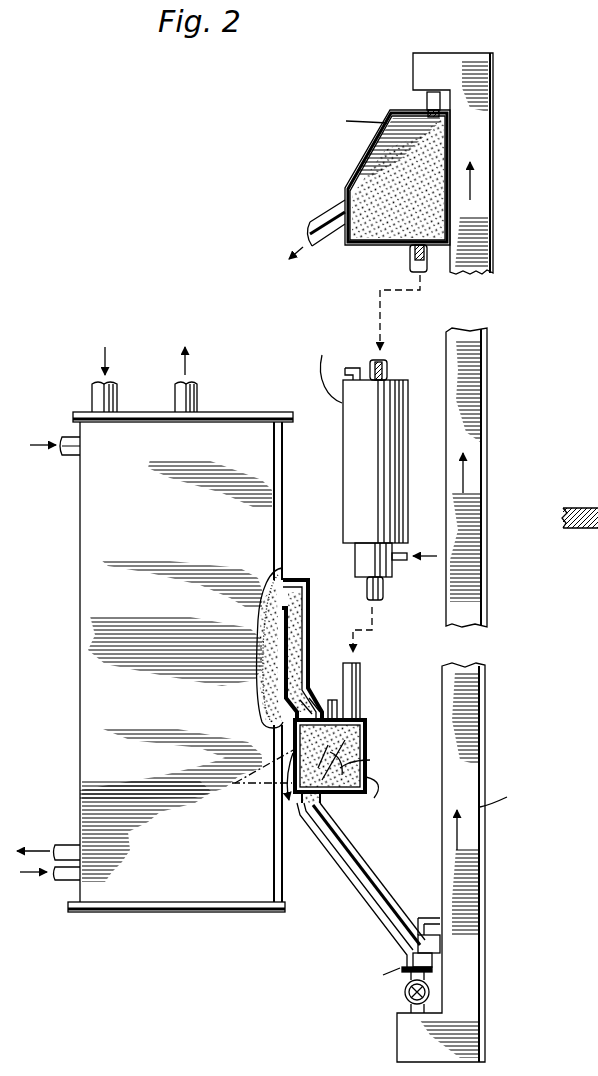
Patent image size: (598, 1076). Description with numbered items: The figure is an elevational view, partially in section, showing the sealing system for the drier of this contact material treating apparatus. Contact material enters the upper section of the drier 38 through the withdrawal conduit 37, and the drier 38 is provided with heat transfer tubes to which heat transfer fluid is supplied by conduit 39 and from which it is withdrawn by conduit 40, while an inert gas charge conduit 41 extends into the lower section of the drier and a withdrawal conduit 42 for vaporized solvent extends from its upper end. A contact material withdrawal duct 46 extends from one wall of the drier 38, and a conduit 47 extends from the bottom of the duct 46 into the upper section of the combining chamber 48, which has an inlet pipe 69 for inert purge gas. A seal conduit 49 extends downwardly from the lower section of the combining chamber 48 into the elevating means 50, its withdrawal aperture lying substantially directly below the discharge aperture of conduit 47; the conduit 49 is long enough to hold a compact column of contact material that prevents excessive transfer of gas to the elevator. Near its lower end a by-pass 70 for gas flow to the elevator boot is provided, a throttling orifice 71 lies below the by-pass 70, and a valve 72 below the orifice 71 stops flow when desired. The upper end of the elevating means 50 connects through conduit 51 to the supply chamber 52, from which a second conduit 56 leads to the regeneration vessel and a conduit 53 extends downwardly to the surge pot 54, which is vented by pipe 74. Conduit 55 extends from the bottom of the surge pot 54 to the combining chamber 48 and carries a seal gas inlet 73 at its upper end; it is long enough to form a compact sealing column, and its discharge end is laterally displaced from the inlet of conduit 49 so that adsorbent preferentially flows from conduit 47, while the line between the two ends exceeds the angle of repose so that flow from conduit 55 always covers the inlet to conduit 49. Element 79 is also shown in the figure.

The contact material withdrawal conduit 37 is at (117, 397).
The drier 38 is at (80, 652).
The heat transfer fluid supply conduit 39 is at (68, 457).
The heat transfer fluid withdrawal conduit 40 is at (64, 845).
The inert gas charge conduit 41 is at (62, 884).
The vaporized solvent withdrawal conduit 42 is at (197, 403).
The contact material withdrawal duct 46 is at (308, 612).
The conduit 47 is at (313, 698).
The combining chamber 48 is at (365, 732).
The seal conduit 49 is at (360, 869).
The elevating means 50 is at (475, 578).
The conduit 51 is at (427, 100).
The supply chamber 52 is at (367, 150).
The conduit 53 is at (410, 258).
The surge pot 54 is at (323, 456).
The conduit 55 is at (385, 592).
The second conduit 56 is at (317, 235).
The inlet pipe 69 is at (337, 706).
The by-pass 70 is at (430, 916).
The throttling orifice 71 is at (402, 972).
The valve 72 is at (406, 998).
The seal gas inlet 73 is at (400, 562).
The vent pipe 74 is at (357, 366).
The conduit section 79 is at (597, 446).